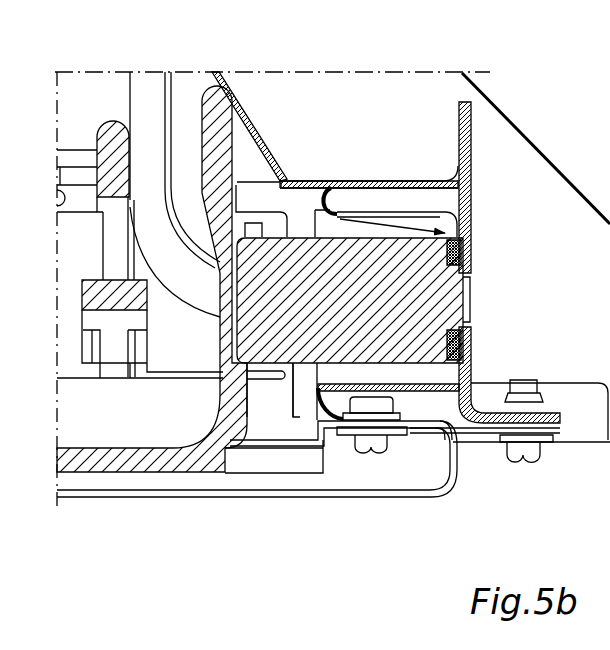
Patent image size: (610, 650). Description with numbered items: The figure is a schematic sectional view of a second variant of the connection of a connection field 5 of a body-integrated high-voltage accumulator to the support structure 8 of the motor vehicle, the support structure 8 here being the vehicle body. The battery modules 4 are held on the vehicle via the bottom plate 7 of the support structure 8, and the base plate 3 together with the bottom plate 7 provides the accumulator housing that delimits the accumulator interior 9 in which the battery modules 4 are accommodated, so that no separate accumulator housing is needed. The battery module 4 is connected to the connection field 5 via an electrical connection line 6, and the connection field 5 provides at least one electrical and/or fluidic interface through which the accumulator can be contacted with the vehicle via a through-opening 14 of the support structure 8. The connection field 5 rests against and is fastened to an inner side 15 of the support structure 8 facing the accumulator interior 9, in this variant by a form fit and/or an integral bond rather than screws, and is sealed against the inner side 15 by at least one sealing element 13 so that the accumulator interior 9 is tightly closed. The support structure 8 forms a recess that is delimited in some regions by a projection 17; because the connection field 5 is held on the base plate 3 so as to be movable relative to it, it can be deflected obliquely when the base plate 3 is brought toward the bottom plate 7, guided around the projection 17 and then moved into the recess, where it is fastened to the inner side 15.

The base plate 3 is at (347, 495).
The battery module 4 is at (112, 430).
The connection field 5 is at (467, 290).
The electrical connection line 6 is at (205, 293).
The bottom plate 7 is at (475, 433).
The support structure 8 is at (423, 184).
The accumulator interior 9 is at (283, 392).
The sealing element 13 is at (447, 343).
The through-opening 14 is at (470, 311).
The inner side 15 is at (330, 203).
The projection 17 is at (452, 432).